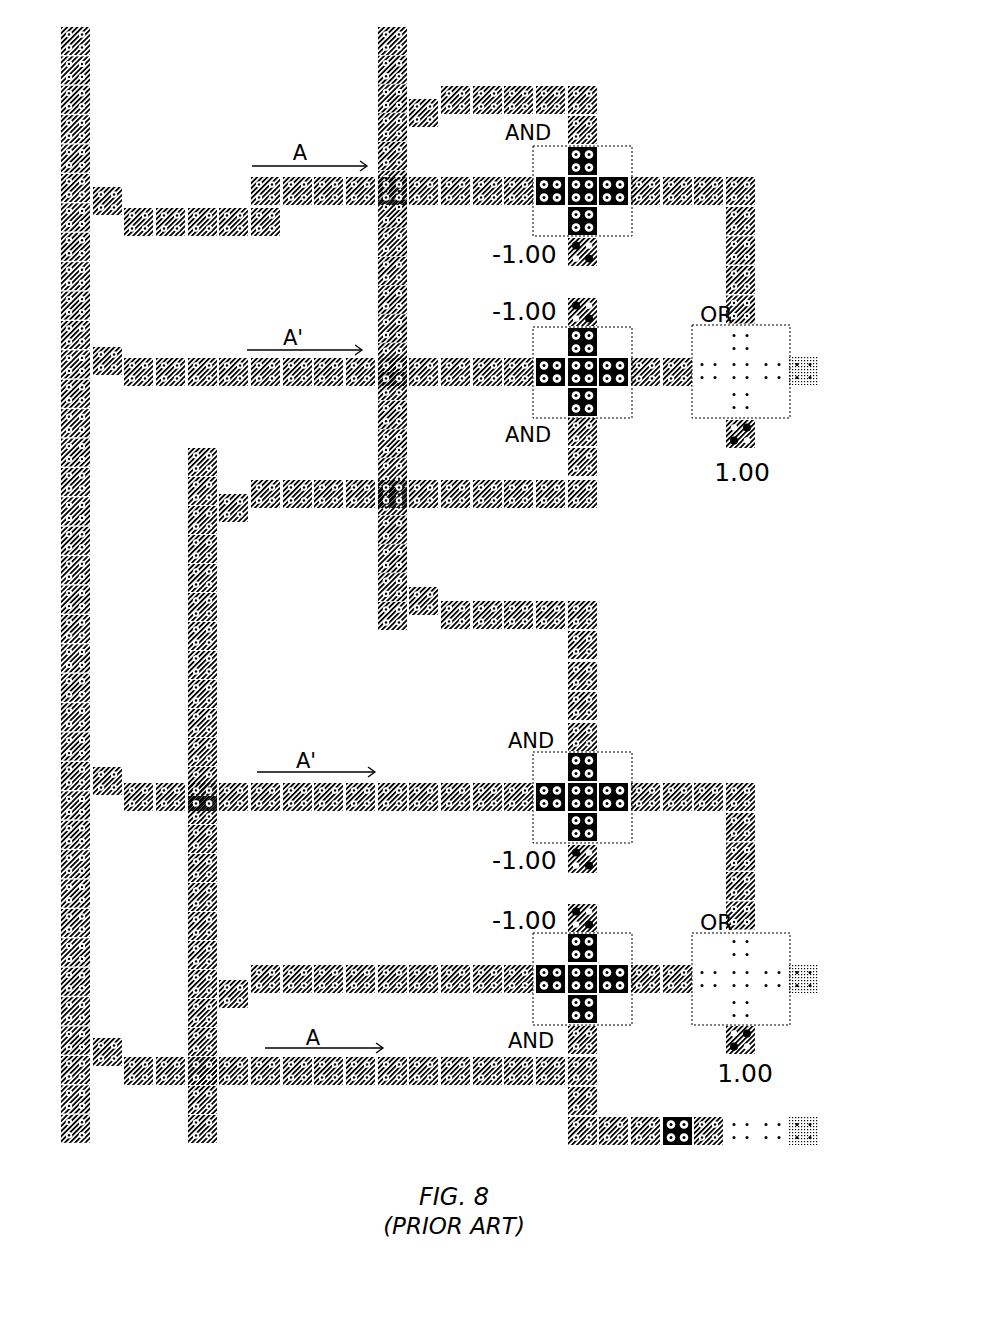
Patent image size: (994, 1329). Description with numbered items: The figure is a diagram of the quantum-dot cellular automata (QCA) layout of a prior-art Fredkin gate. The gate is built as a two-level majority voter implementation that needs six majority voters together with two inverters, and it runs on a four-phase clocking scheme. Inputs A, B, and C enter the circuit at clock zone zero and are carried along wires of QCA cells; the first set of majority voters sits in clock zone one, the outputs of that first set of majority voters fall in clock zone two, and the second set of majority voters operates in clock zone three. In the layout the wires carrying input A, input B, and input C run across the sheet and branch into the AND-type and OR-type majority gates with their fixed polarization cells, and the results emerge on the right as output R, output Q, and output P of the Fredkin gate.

The input A is at (75, 571).
The input B is at (392, 315).
The input C is at (202, 815).
The output R is at (817, 374).
The output Q is at (818, 981).
The output P is at (817, 1134).